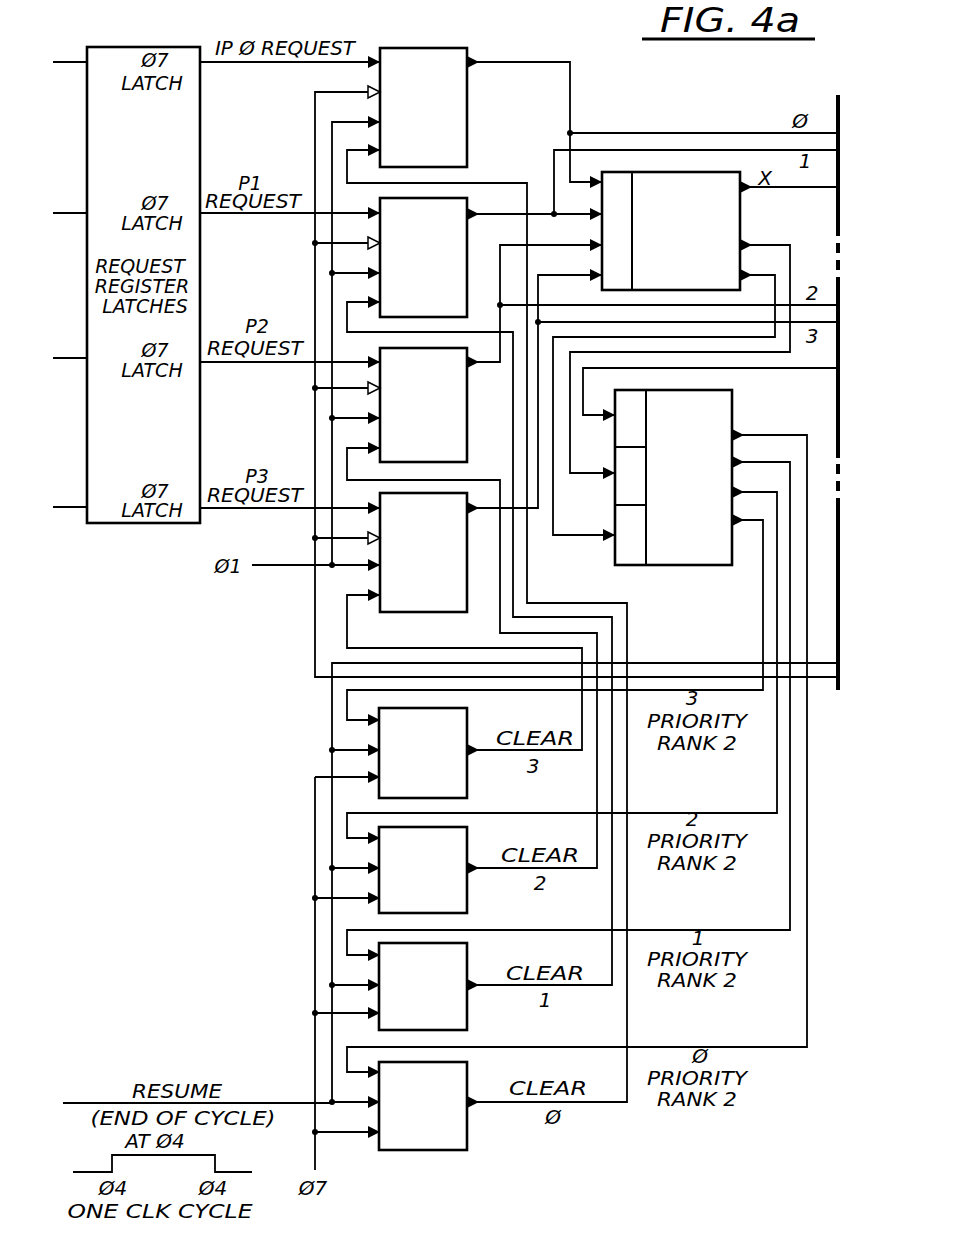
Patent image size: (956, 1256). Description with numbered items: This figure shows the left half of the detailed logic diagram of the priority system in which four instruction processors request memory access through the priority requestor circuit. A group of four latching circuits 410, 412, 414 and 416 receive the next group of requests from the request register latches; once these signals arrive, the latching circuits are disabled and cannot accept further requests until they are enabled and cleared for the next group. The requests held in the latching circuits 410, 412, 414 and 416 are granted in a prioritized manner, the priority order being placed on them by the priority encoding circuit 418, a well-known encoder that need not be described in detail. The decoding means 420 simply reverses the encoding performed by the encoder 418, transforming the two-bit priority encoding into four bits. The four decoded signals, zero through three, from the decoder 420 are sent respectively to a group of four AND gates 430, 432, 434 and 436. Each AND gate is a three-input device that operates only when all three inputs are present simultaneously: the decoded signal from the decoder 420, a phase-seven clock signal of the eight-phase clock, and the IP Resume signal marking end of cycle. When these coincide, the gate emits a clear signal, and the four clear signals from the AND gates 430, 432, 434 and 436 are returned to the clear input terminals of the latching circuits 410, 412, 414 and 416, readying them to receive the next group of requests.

The latching circuit 410 is at (378, 70).
The latching circuit 412 is at (378, 224).
The latching circuit 414 is at (378, 372).
The latching circuit 416 is at (378, 519).
The priority encoding circuit 418 is at (687, 172).
The decoding means 420 is at (668, 567).
The AND gate 430 is at (467, 790).
The AND gate 432 is at (467, 905).
The AND gate 434 is at (467, 1022).
The AND gate 436 is at (467, 1142).